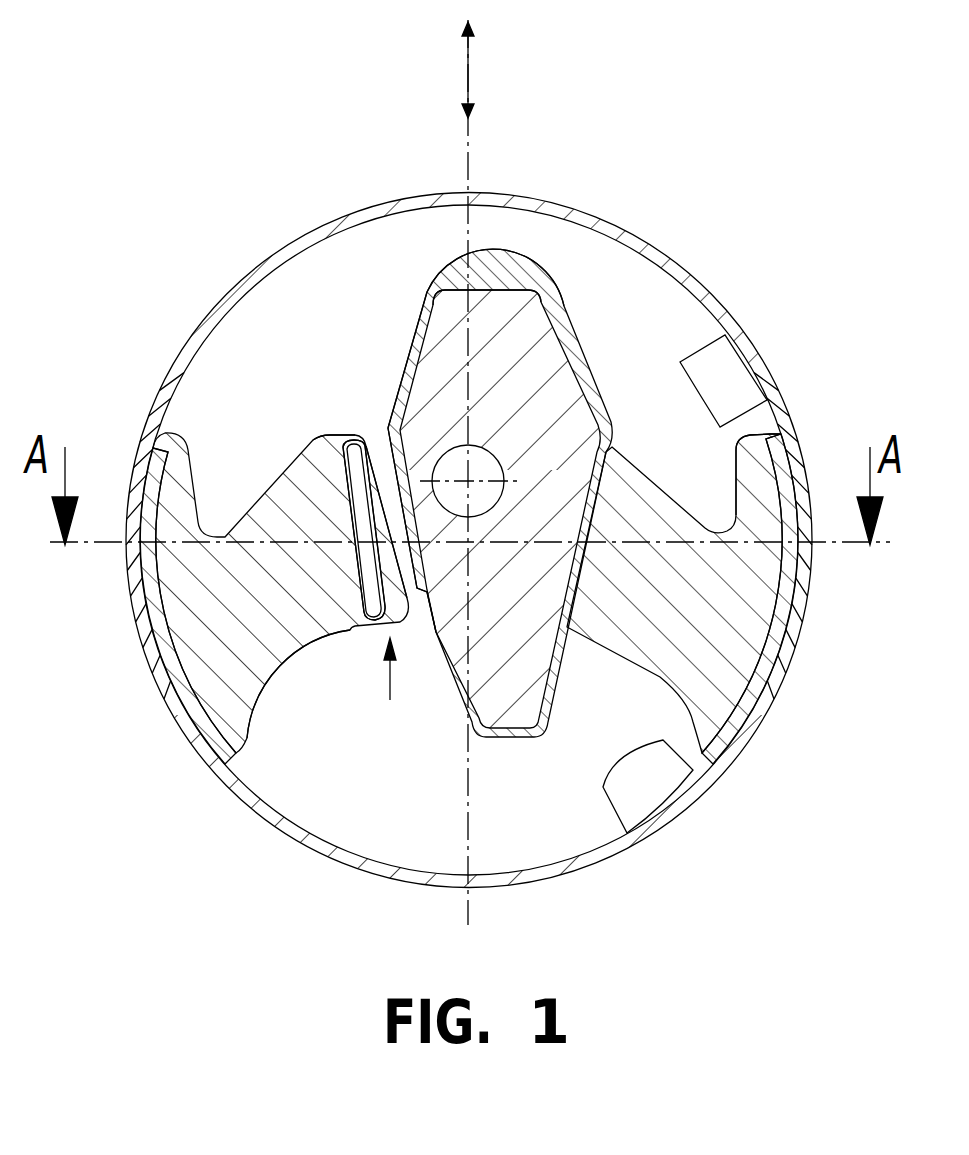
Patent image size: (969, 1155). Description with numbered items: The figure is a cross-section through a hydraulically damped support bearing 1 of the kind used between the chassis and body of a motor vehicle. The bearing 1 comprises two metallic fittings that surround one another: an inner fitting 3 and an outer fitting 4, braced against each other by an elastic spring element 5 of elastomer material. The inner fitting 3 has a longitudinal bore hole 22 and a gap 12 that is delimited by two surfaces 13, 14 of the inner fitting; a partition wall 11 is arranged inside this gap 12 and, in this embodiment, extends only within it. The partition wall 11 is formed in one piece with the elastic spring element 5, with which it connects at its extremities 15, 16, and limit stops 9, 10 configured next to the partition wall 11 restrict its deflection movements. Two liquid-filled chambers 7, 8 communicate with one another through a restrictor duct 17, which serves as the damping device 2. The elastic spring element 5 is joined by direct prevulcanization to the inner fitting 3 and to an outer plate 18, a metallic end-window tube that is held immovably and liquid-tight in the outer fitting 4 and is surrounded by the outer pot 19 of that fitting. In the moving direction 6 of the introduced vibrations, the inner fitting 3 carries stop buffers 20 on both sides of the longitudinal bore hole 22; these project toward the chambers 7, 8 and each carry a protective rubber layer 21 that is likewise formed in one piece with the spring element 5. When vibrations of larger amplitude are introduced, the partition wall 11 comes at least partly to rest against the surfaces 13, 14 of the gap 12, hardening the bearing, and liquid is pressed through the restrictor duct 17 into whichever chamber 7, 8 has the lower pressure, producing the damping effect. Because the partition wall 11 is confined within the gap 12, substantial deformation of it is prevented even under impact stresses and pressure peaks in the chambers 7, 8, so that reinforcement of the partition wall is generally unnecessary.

The bearing 1 is at (258, 160).
The damping device 2 is at (698, 868).
The inner fitting 3 is at (537, 323).
The outer fitting 4 is at (680, 283).
The elastic spring element 5 is at (700, 681).
The moving direction 6 is at (470, 72).
The liquid-filled chamber 7 is at (350, 247).
The liquid-filled chamber 8 is at (313, 777).
The limit stop 9 is at (400, 440).
The limit stop 10 is at (355, 572).
The partition wall 11 is at (402, 577).
The gap 12 is at (392, 698).
The surface 13 is at (340, 478).
The surface 14 is at (388, 420).
The extremity 15 is at (360, 436).
The extremity 16 is at (421, 618).
The restrictor duct 17 is at (710, 353).
The outer plate 18 is at (780, 467).
The outer pot 19 is at (797, 605).
The stop buffer 20 is at (514, 262).
The protective rubber layer 21 is at (483, 252).
The longitudinal bore hole 22 is at (484, 491).